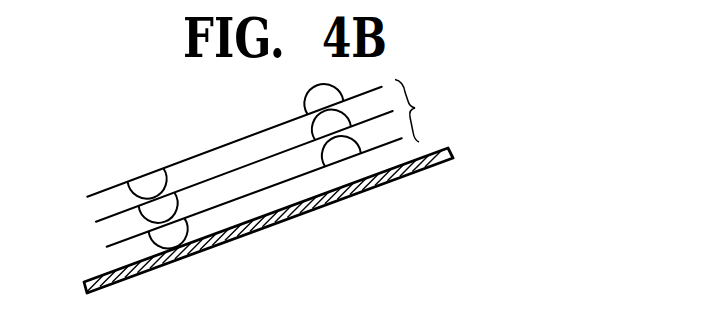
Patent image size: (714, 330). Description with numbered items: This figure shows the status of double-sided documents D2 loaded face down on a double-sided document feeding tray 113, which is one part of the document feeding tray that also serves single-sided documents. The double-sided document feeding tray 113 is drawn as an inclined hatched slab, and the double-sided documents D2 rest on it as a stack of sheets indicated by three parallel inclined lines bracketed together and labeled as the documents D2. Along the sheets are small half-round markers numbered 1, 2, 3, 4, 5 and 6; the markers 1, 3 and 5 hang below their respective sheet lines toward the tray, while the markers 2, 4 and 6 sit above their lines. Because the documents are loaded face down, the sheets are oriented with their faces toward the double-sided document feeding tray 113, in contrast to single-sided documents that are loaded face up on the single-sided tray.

The first dummy pattern 1 is at (168, 233).
The second dummy pattern 2 is at (341, 151).
The third dummy pattern 3 is at (158, 208).
The fourth dummy pattern 4 is at (331, 125).
The fifth dummy pattern 5 is at (147, 183).
The sixth dummy pattern 6 is at (323, 99).
The double-sided document feeding tray 113 is at (453, 152).
The double-sided documents D2 is at (419, 111).